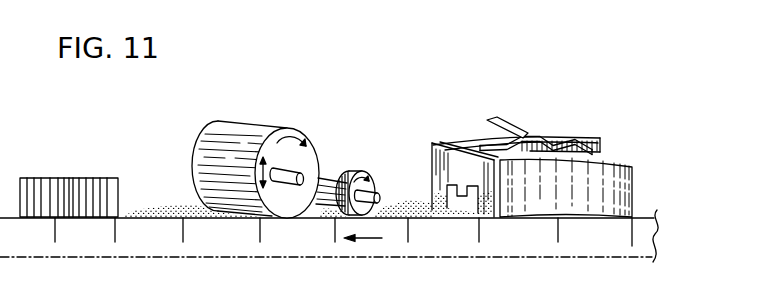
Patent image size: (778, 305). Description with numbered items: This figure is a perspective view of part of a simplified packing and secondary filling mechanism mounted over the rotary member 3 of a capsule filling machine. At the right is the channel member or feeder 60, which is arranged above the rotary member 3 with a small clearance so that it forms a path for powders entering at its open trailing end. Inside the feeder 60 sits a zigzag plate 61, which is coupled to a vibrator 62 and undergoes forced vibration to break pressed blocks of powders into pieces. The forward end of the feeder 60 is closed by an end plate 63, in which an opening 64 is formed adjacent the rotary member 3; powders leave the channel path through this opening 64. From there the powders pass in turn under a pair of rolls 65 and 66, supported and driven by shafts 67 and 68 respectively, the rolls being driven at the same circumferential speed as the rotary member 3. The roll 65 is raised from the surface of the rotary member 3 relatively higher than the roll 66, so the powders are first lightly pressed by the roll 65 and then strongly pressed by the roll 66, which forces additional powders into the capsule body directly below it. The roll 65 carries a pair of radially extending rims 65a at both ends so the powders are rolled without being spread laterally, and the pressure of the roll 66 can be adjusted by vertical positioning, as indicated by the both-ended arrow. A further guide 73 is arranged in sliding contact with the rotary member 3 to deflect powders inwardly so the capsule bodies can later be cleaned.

The rotary member 3 is at (553, 249).
The guide 73 is at (70, 181).
The roll 66 is at (253, 123).
The shaft 68 is at (302, 171).
The roll 65 is at (340, 177).
The shaft 67 is at (377, 195).
The radially extending rims 65a is at (368, 188).
The end plate 63 is at (438, 143).
The opening 64 is at (459, 189).
The channel member or feeder 60 is at (599, 181).
The zigzag plate 61 is at (556, 141).
The vibrator 62 is at (491, 116).